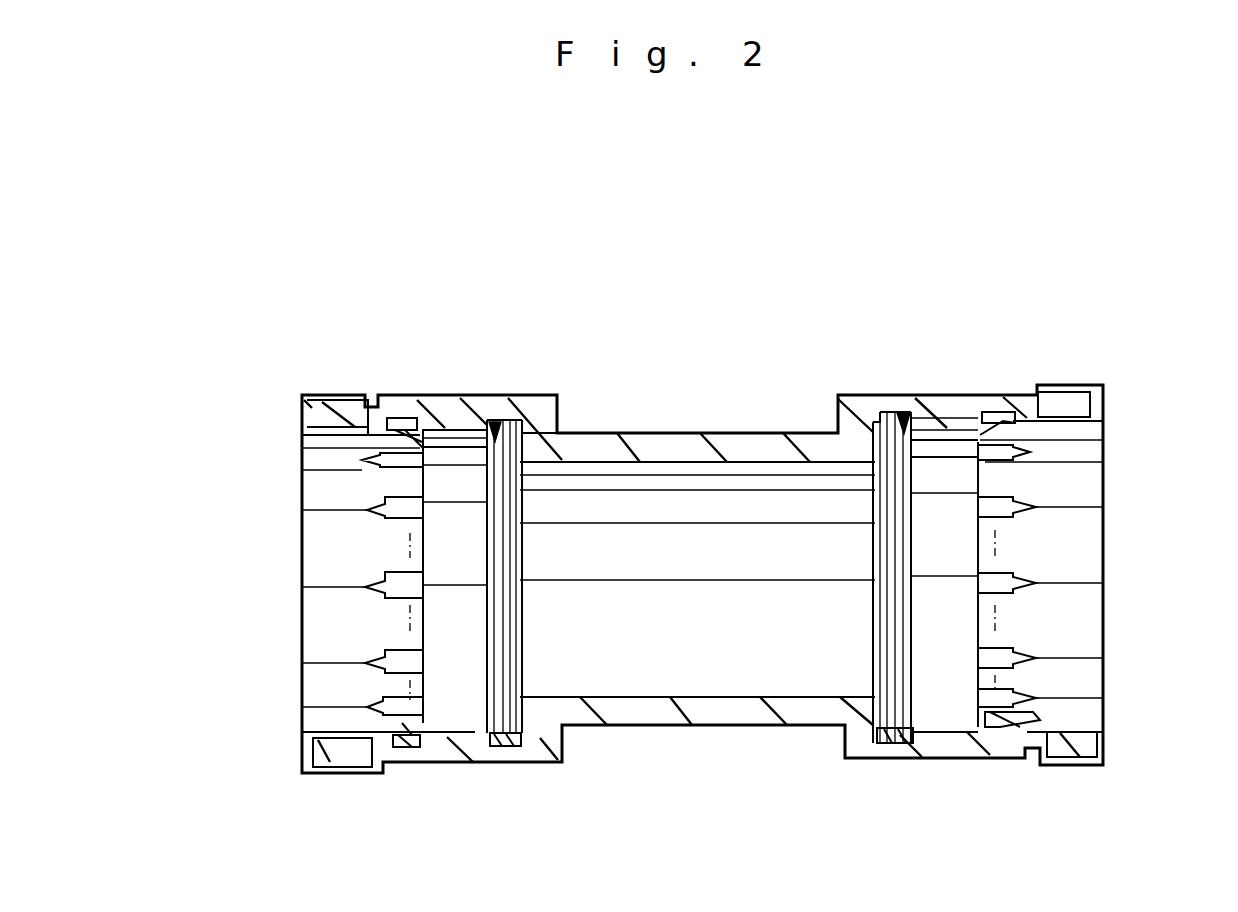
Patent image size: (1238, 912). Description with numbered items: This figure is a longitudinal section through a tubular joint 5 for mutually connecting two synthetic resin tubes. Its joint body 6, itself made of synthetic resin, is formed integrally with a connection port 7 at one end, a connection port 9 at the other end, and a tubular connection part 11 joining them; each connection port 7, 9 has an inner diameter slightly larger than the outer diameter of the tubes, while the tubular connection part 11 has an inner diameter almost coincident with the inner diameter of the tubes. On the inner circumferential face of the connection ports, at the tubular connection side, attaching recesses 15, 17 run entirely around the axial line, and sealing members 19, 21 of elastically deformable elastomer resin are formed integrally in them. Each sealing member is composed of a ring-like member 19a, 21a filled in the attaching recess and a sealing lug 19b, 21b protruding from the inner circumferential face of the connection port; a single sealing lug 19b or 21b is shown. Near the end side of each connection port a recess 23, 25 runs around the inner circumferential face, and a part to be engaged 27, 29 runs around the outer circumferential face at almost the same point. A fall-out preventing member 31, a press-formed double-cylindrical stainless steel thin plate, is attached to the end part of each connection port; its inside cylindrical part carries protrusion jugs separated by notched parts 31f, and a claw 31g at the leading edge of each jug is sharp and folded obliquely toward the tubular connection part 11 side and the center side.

The tubular joint 5 is at (776, 292).
The joint body 6 is at (670, 433).
The connection port 7 is at (455, 398).
The connection port 9 is at (953, 398).
The tubular connection part 11 is at (739, 448).
The attaching recess 15 is at (502, 420).
The attaching recess 17 is at (902, 462).
The sealing member 19 is at (523, 575).
The ring-like member 19a is at (510, 752).
The sealing lug 19b is at (488, 737).
The sealing member 21 is at (868, 569).
The ring-like member 21a is at (907, 743).
The sealing lug 21b is at (873, 723).
The recess 23 is at (413, 750).
The recess 25 is at (1022, 743).
The part to be engaged 27 is at (383, 398).
The part to be engaged 29 is at (1024, 395).
The fall-out preventing member 31 is at (303, 558).
The notched part 31f is at (382, 498).
The claw 31g is at (418, 625).